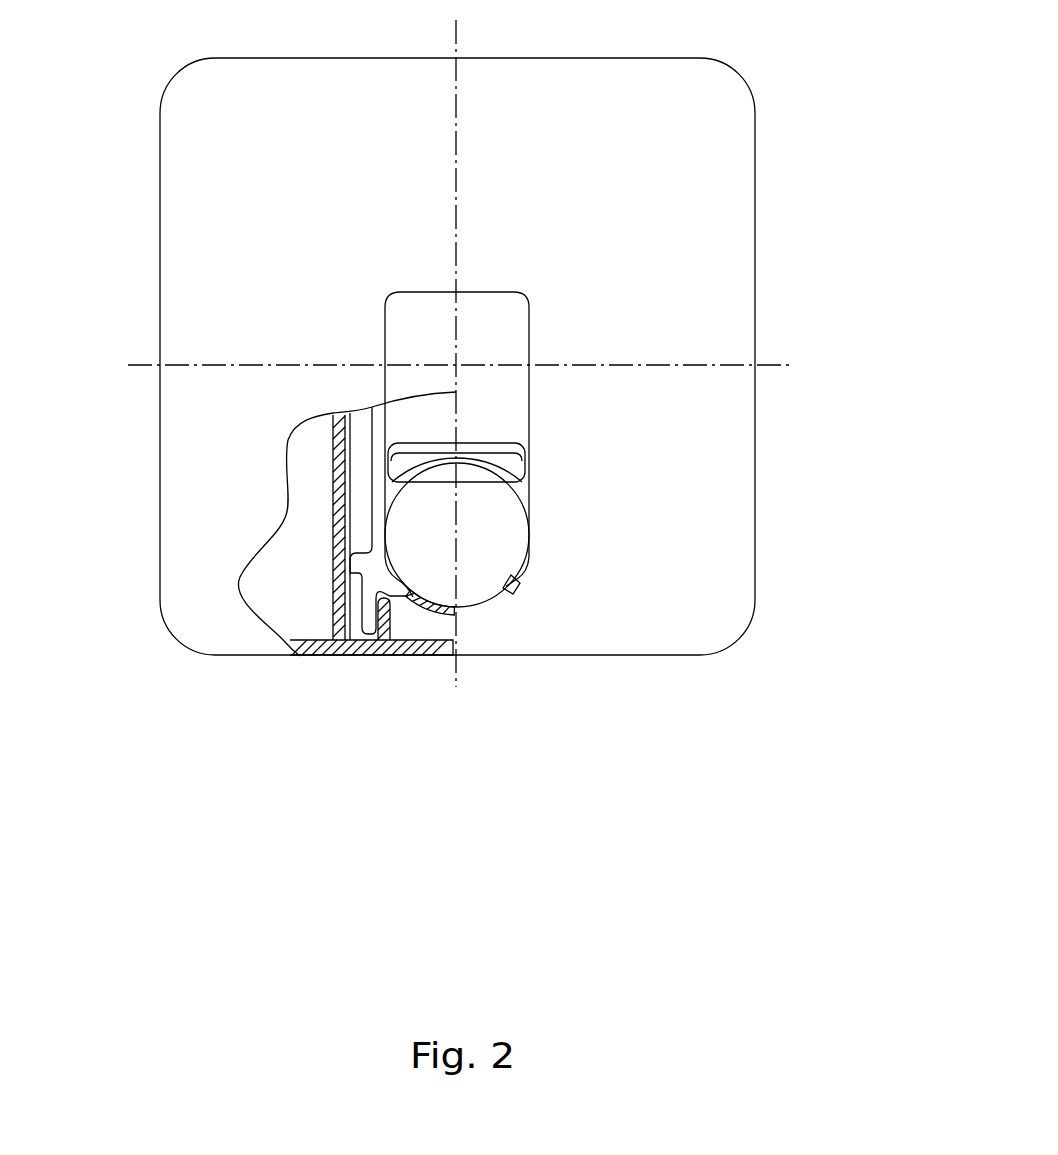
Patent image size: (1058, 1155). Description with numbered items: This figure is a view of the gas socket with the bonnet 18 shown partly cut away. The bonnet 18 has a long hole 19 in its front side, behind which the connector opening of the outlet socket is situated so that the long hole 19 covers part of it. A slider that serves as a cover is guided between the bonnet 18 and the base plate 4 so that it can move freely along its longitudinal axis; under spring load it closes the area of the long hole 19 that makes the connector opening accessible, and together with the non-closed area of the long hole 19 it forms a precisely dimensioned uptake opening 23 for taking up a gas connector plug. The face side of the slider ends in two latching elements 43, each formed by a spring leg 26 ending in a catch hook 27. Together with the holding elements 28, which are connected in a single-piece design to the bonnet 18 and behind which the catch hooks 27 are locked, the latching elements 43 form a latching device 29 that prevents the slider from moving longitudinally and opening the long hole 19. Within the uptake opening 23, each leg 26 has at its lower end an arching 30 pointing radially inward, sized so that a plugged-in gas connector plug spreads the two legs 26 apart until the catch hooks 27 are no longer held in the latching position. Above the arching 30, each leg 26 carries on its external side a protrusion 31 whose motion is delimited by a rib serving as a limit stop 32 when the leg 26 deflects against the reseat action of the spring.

The bonnet 18 is at (652, 175).
The long hole 19 is at (529, 403).
The uptake opening 23 is at (497, 505).
The arching 30 is at (512, 578).
The spring leg 26 is at (380, 497).
The latching element 43 is at (377, 538).
The protrusion 31 is at (355, 562).
The holding element 28 is at (378, 606).
The latching device 29 is at (350, 608).
The limit stop 32 is at (340, 623).
The catch hook 27 is at (370, 627).
The base plate 4 is at (305, 632).